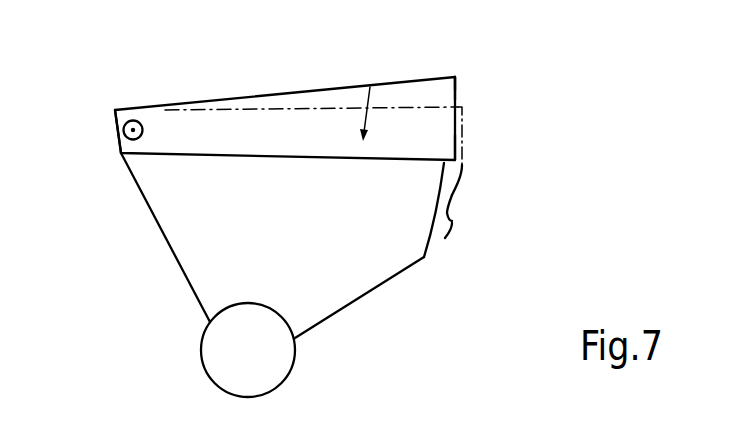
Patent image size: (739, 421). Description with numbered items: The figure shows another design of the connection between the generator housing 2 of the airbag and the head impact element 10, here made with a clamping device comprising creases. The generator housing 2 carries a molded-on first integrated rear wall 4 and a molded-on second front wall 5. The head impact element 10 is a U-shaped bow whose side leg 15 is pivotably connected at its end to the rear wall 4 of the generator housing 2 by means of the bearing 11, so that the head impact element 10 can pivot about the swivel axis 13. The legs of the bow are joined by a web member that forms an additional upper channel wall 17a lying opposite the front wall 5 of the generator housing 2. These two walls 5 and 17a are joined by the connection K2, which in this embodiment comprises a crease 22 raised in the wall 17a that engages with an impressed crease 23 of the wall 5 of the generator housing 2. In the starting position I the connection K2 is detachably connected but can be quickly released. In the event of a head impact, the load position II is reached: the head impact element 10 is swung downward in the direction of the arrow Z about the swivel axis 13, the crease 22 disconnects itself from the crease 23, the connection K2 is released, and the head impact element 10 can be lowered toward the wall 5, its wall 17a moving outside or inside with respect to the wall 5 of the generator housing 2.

The generator housing 2 is at (202, 357).
The first integrated rear wall 4 is at (158, 230).
The second front wall 5 is at (428, 258).
The head impact element 10 is at (400, 83).
The bearing 11 is at (115, 128).
The swivel axis 13 is at (134, 119).
The side leg 15 is at (297, 100).
The upper channel wall 17a is at (458, 97).
The crease 22 is at (451, 222).
The impressed crease 23 is at (453, 143).
The starting position I is at (520, 67).
The load position II is at (552, 146).
The connection K2 is at (466, 203).
The direction of the arrow Z is at (362, 121).